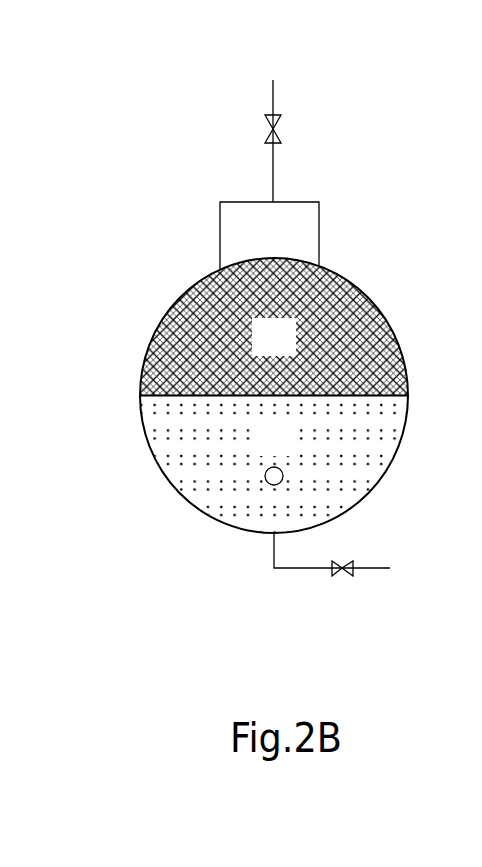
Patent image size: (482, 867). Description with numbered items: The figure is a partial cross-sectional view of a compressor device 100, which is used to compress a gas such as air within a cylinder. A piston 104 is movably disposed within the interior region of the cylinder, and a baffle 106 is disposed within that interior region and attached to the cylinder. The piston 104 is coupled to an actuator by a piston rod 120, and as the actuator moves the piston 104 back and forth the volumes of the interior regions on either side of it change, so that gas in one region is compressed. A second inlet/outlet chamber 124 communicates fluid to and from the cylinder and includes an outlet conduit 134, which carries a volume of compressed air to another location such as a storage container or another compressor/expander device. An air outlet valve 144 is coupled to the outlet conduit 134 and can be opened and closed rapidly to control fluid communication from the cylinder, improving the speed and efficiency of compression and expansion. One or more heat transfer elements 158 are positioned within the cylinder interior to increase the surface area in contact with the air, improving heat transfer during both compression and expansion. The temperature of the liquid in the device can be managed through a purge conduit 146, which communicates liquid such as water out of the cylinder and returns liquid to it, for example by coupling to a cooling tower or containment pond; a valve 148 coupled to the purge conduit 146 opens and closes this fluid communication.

The compressor device 100 is at (115, 305).
The piston 104 is at (292, 451).
The baffle 106 is at (292, 350).
The piston rod 120 is at (265, 479).
The second inlet/outlet chamber 124 is at (300, 237).
The outlet conduit 134 is at (273, 103).
The air outlet valve 144 is at (275, 131).
The purge conduit 146 is at (376, 568).
The valve 148 is at (342, 573).
The heat transfer element 158 is at (372, 336).